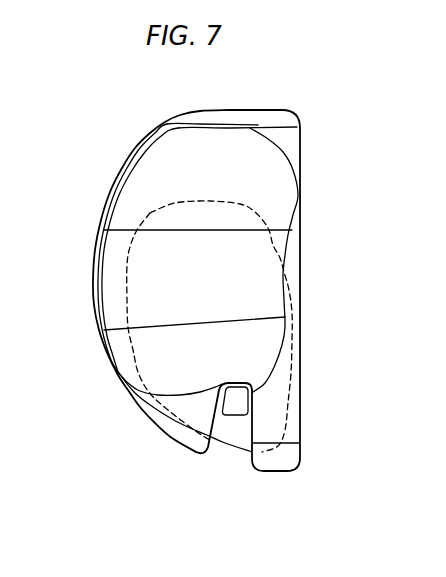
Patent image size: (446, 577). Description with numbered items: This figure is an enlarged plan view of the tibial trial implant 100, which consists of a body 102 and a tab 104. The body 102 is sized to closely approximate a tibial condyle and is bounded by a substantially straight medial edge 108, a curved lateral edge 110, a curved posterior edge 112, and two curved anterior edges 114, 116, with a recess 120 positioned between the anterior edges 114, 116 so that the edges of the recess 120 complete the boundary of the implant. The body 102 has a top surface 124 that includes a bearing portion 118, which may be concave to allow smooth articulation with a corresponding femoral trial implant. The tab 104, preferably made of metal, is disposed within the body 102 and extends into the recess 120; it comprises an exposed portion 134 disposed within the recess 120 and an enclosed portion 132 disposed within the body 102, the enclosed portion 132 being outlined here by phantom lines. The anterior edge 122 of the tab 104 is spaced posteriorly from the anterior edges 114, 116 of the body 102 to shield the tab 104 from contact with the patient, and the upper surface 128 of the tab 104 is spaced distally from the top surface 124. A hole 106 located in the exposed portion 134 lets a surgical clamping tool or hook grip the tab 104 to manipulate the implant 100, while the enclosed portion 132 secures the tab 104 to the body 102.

The tibial trial implant 100 is at (299, 106).
The body 102 is at (268, 184).
The tab 104 is at (243, 427).
The hole 106 is at (238, 393).
The medial edge 108 is at (292, 232).
The lateral edge 110 is at (93, 268).
The posterior edge 112 is at (231, 110).
The anterior edge 114 is at (287, 475).
The anterior edge 116 is at (182, 447).
The bearing portion 118 is at (216, 184).
The recess 120 is at (213, 460).
The anterior edge of tab 122 is at (246, 442).
The top surface 124 is at (158, 172).
The upper surface of tab 128 is at (180, 438).
The enclosed portion 132 is at (258, 268).
The exposed portion 134 is at (253, 452).